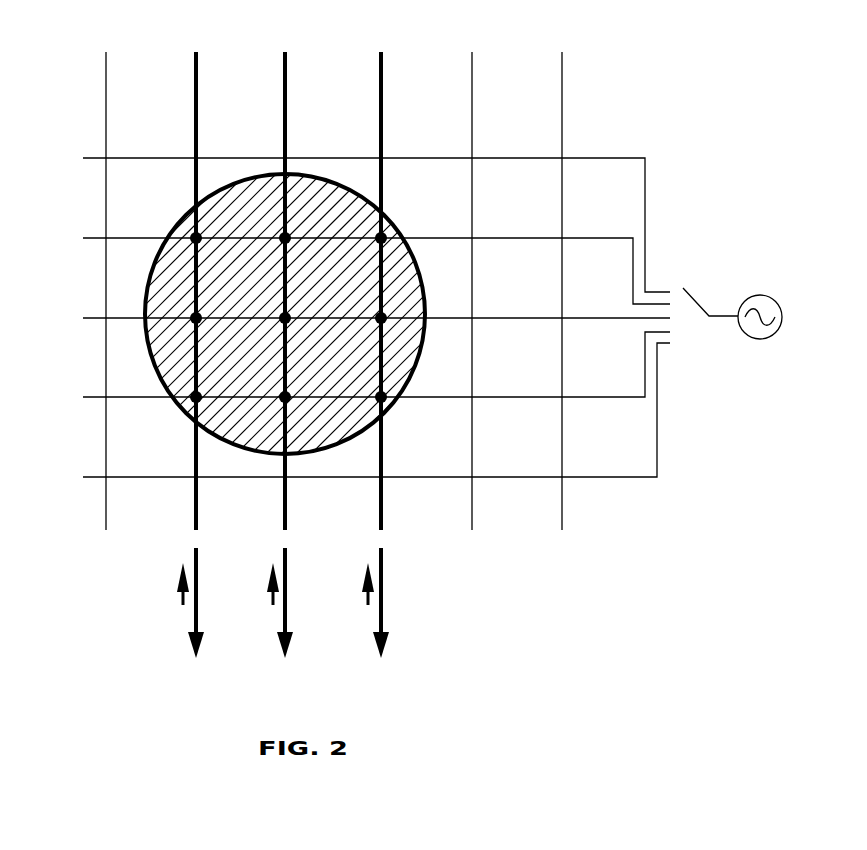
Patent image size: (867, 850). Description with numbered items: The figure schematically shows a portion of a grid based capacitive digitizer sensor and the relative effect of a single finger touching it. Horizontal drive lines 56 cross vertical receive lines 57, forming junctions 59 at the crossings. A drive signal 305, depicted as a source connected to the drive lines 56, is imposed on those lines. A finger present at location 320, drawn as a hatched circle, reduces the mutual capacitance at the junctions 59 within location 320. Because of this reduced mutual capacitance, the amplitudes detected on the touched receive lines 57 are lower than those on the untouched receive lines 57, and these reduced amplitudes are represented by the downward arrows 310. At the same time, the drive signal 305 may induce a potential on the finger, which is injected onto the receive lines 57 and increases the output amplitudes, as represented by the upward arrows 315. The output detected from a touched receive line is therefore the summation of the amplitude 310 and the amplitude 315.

The drive lines 56 is at (612, 158).
The receive lines 57 is at (106, 503).
The junctions 59 is at (192, 235).
The location 320 is at (347, 188).
The drive signal 305 is at (722, 312).
The arrows 310 is at (200, 608).
The arrows 315 is at (182, 600).